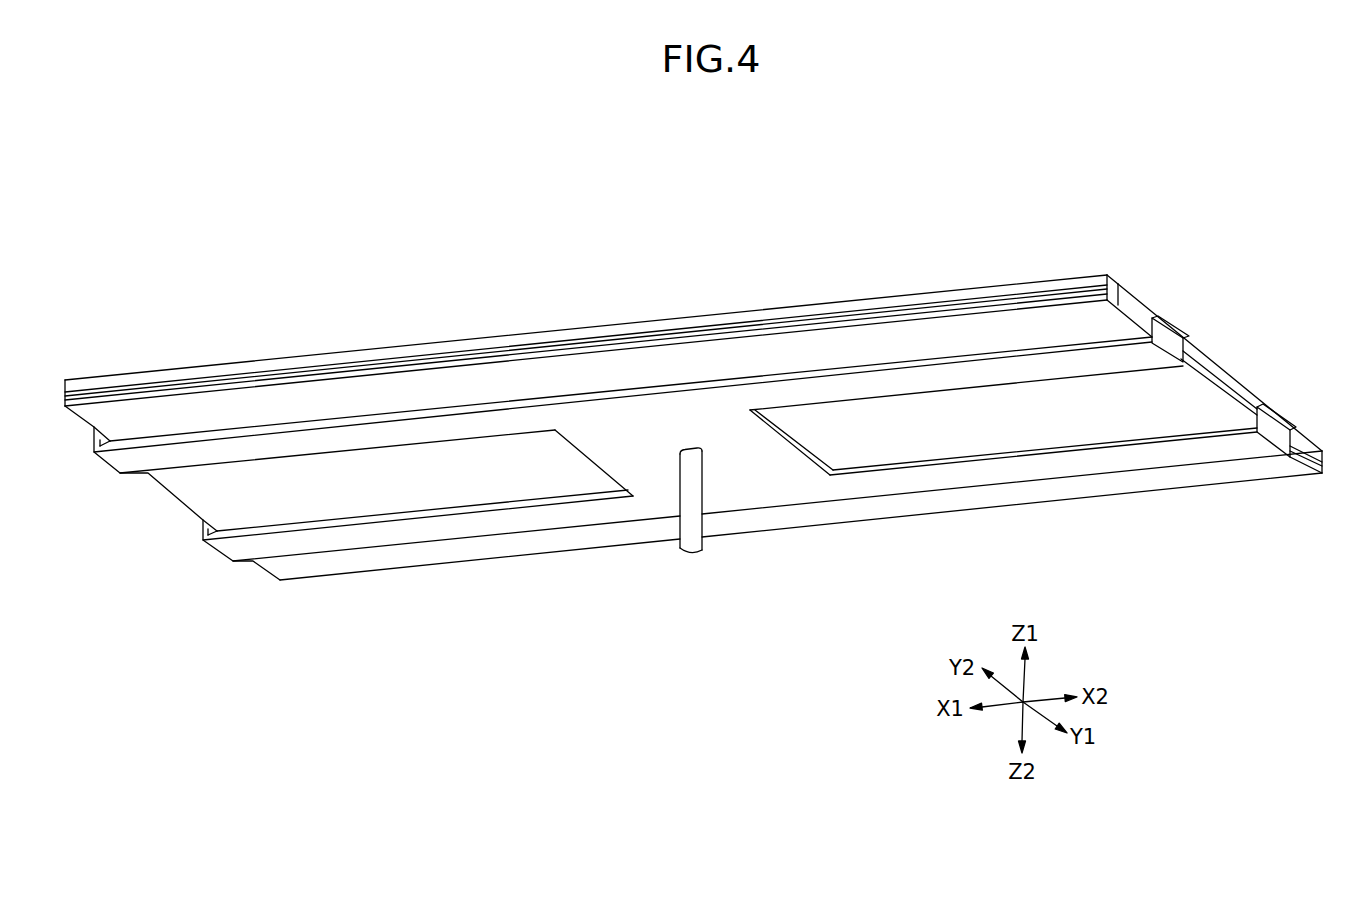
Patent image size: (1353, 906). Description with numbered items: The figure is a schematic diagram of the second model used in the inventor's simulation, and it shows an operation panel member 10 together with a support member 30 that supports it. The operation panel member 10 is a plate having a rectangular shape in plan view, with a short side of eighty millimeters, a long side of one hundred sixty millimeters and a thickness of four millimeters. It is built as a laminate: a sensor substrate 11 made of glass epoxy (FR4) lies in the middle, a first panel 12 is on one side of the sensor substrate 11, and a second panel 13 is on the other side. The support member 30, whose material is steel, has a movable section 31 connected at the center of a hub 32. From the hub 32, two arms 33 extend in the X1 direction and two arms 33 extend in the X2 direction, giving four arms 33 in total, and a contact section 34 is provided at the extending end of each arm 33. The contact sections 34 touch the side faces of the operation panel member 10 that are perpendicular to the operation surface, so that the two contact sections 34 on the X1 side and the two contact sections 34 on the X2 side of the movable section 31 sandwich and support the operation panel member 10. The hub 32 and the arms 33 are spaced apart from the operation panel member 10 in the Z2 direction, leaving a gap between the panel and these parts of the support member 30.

The operation panel member 10 is at (591, 299).
The sensor substrate 11 is at (808, 318).
The first panel 12 is at (865, 305).
The second panel 13 is at (788, 240).
The support member 30 is at (826, 512).
The movable section 31 is at (692, 502).
The hub 32 is at (772, 457).
The arm 33 is at (353, 438).
The contact section 34 is at (1170, 340).